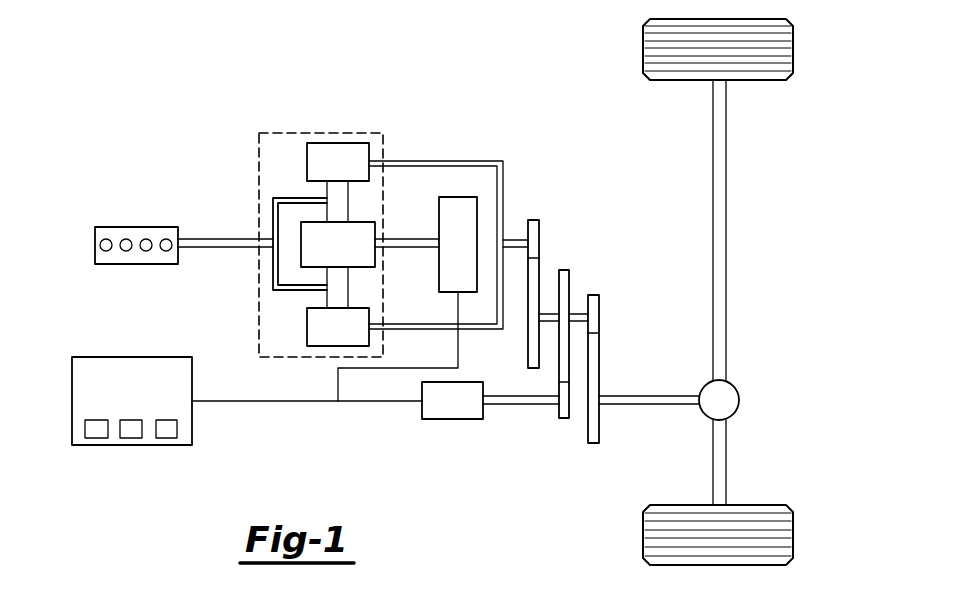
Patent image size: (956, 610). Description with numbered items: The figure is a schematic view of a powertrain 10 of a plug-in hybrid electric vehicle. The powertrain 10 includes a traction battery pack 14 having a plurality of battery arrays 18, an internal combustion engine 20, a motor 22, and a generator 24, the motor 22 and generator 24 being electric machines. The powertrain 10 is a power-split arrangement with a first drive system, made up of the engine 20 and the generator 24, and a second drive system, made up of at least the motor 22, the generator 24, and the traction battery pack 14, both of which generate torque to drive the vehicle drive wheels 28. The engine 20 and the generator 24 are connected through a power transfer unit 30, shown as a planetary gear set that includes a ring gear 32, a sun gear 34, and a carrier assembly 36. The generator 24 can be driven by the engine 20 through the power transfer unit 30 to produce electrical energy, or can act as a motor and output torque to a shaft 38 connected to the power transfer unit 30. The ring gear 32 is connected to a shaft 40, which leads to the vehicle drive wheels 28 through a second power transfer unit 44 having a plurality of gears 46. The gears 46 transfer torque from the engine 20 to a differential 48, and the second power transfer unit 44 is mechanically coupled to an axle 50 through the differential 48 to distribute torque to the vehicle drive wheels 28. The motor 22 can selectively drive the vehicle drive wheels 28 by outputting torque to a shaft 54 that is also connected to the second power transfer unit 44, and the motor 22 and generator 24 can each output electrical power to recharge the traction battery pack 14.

The powertrain 10 is at (160, 98).
The traction battery pack 14 is at (247, 398).
The battery arrays 18 is at (96, 445).
The internal combustion engine 20 is at (96, 227).
The motor 22 is at (454, 419).
The generator 24 is at (478, 207).
The vehicle drive wheels 28 is at (793, 49).
The power transfer unit 30 is at (384, 133).
The ring gear 32 is at (307, 160).
The sun gear 34 is at (362, 267).
The carrier assembly 36 is at (273, 221).
The shaft 38 is at (412, 239).
The shaft 40 is at (516, 248).
The second power transfer unit 44 is at (610, 328).
The gears 46 is at (539, 236).
The differential 48 is at (739, 400).
The axle 50 is at (726, 230).
The shaft 54 is at (522, 405).